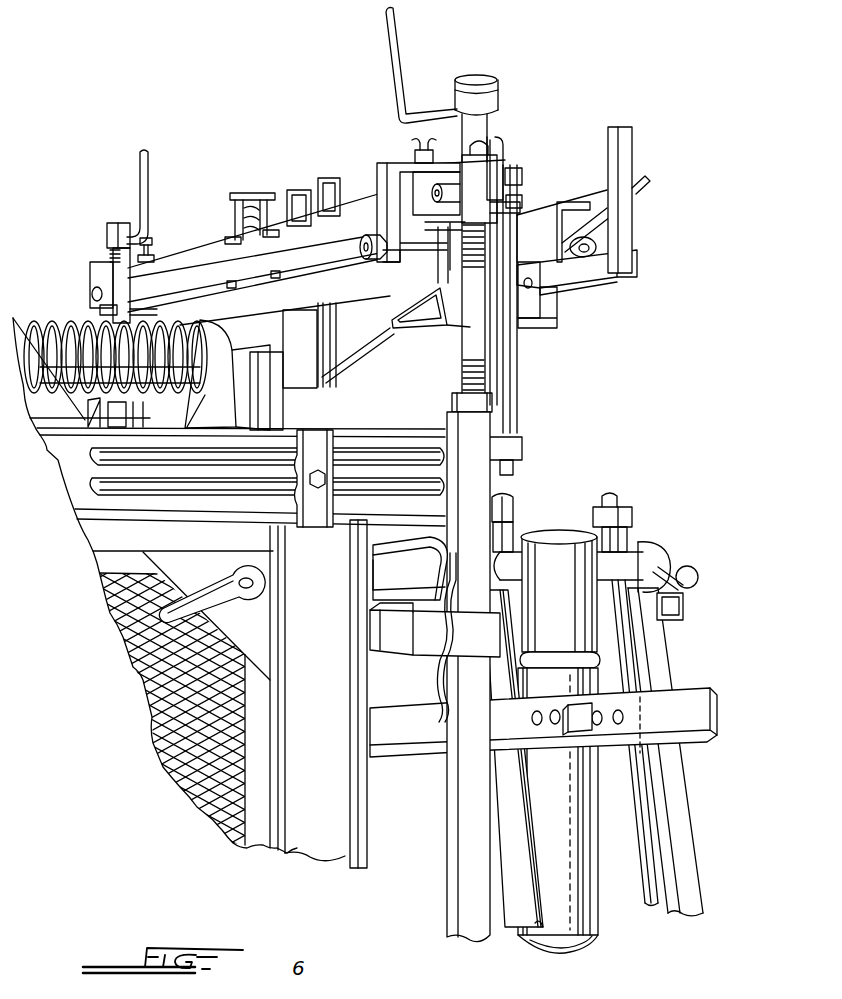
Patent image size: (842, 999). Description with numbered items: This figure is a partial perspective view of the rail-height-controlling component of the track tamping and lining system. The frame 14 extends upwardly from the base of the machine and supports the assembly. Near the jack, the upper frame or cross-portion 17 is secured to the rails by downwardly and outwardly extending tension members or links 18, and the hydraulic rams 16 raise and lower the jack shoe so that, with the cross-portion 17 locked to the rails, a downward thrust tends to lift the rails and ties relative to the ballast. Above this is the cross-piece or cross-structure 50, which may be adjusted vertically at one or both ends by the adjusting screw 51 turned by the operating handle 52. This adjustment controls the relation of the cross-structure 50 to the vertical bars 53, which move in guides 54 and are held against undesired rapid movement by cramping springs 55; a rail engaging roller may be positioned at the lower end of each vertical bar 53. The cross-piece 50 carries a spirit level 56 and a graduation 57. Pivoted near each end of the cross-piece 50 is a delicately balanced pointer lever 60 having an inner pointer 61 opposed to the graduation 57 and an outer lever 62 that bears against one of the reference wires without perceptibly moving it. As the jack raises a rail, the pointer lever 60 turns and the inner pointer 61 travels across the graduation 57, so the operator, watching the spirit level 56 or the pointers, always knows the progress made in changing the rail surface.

The frame 14 is at (347, 853).
The hydraulic rams 16 is at (600, 923).
The upper frame or cross-portion 17 is at (684, 603).
The tension members or links 18 is at (688, 836).
The cross-piece or cross-structure 50 is at (538, 212).
The adjusting screw 51 is at (107, 250).
The operating handle 52 is at (392, 68).
The vertical bars 53 is at (460, 790).
The guides 54 is at (435, 630).
The cramping springs 55 is at (440, 680).
The spirit level 56 is at (240, 216).
The graduation 57 is at (338, 312).
The pointer lever 60 is at (414, 328).
The inner pointer 61 is at (351, 356).
The outer lever 62 is at (647, 189).